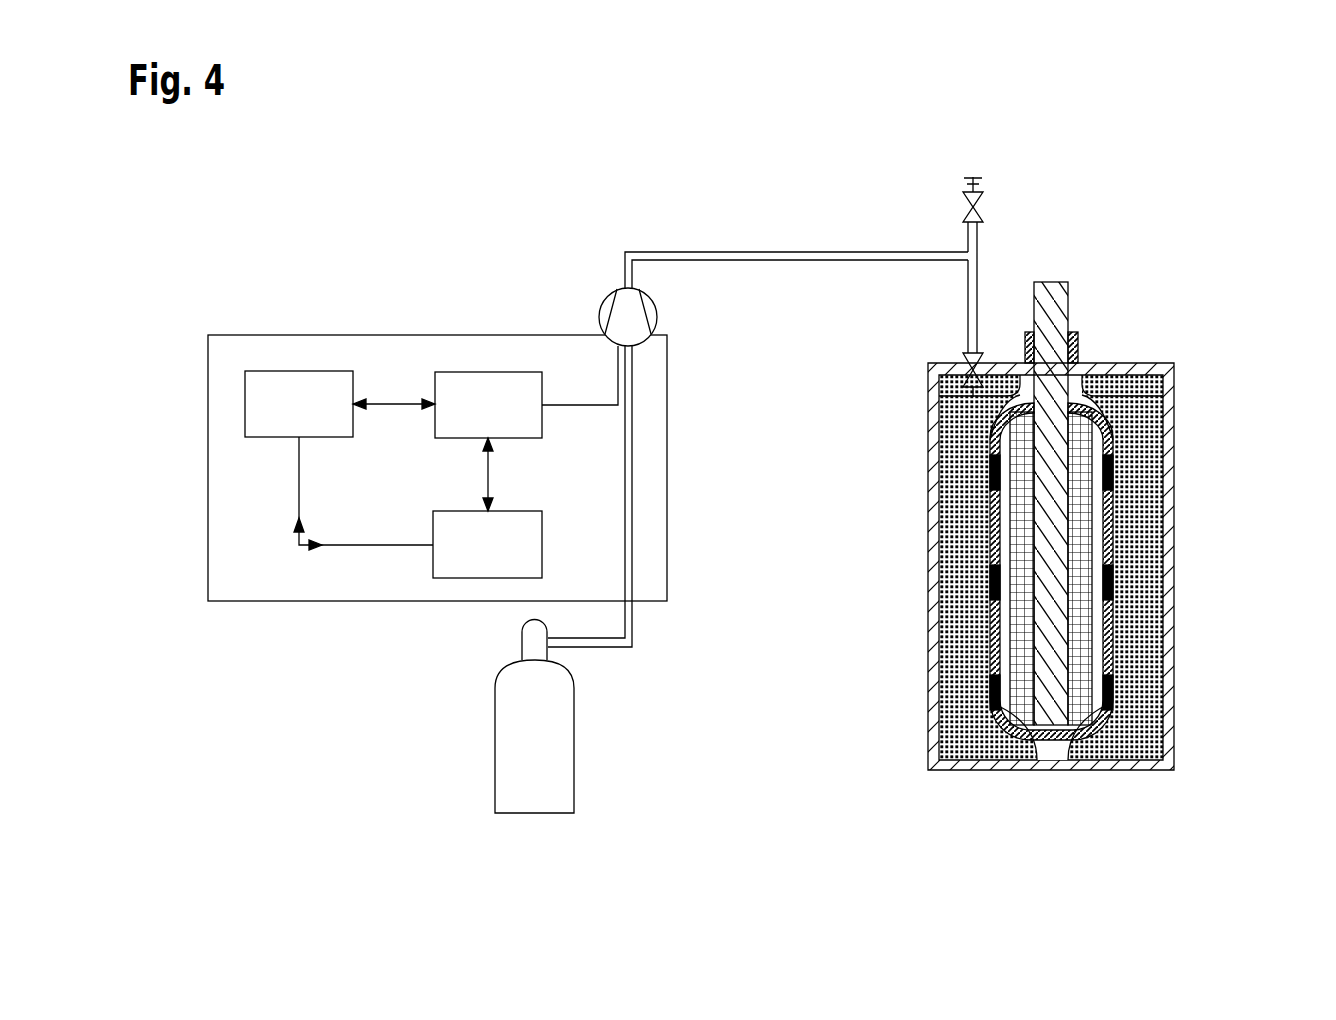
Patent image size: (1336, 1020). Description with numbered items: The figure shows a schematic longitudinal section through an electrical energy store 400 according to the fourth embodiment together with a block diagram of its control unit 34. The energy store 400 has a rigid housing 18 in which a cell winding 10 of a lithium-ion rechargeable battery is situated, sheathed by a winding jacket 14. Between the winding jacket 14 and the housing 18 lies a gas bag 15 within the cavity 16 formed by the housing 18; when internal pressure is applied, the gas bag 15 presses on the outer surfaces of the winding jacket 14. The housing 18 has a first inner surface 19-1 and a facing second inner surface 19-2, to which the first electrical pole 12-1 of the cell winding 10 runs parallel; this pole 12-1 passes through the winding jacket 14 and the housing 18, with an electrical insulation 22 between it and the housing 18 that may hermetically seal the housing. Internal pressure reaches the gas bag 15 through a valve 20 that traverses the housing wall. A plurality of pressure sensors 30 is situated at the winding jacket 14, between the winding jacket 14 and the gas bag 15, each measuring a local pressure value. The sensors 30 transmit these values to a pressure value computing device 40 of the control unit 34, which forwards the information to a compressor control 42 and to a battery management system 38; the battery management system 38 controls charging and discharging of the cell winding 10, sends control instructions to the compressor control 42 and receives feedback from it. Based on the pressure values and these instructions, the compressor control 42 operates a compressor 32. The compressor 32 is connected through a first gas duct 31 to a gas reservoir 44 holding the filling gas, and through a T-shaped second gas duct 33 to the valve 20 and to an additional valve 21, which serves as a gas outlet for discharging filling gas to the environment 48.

The energy store 400 is at (268, 175).
The control unit 34 is at (238, 562).
The battery management system 38 is at (268, 378).
The compressor control 42 is at (458, 378).
The pressure value computing device 40 is at (443, 567).
The compressor 32 is at (610, 292).
The second gas duct 33 is at (733, 256).
The first gas duct 31 is at (600, 640).
The gas reservoir 44 is at (515, 755).
The environment 48 is at (962, 188).
The additional valve 21 is at (981, 201).
The valve 20 is at (962, 357).
The housing 18 is at (1168, 436).
The cavity 16 is at (965, 512).
The gas bag 15 is at (1008, 398).
The winding jacket 14 is at (1108, 545).
The pressure sensors 30 is at (990, 467).
The cell winding 10 is at (1092, 603).
The first electrical pole 12-1 is at (1053, 304).
The electrical insulation 22 is at (1078, 345).
The first inner surface 19-1 is at (941, 660).
The second inner surface 19-2 is at (1161, 658).